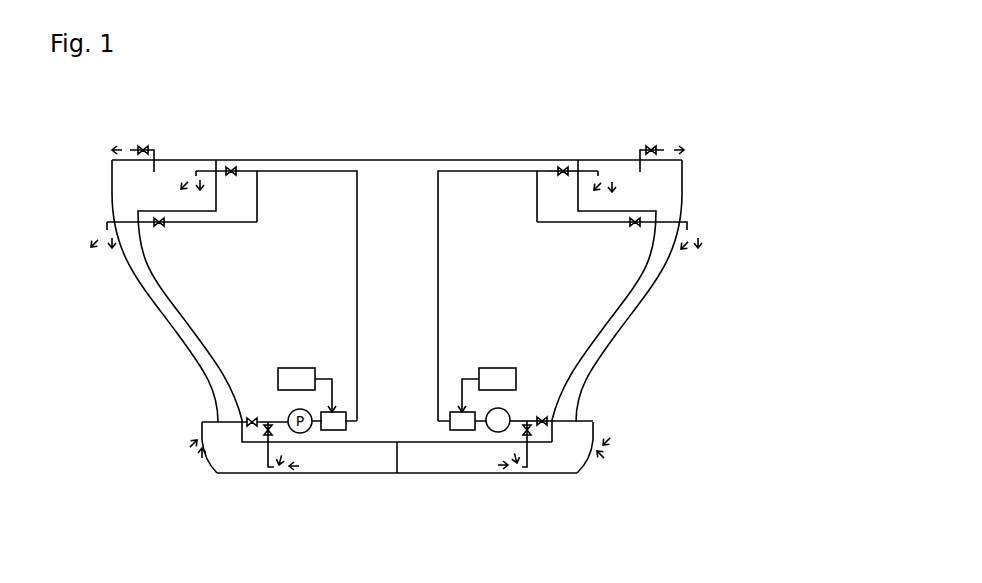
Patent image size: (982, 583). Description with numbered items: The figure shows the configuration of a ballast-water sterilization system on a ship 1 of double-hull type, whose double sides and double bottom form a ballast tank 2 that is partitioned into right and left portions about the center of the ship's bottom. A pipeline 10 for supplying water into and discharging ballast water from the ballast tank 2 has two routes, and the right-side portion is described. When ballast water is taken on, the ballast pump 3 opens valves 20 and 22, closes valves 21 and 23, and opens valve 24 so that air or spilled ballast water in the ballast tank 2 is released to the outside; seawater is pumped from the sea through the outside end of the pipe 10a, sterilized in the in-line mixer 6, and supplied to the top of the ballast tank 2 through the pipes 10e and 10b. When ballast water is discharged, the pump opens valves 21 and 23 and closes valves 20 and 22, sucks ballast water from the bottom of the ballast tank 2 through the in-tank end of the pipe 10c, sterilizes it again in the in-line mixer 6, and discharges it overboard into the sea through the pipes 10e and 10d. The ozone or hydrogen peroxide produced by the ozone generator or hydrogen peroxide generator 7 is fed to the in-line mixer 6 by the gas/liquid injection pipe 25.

The ship 1 is at (173, 332).
The ballast tank 2 is at (600, 358).
The ballast pump 3 is at (492, 430).
The in-line mixer 6 is at (450, 431).
The ozone generator or hydrogen peroxide generator 7 is at (508, 366).
The pipeline 10 is at (423, 202).
The pipe 10a is at (613, 426).
The pipe 10b is at (598, 170).
The pipe 10c is at (523, 466).
The pipe 10d is at (687, 230).
The pipe 10e is at (440, 298).
The valve 20 is at (590, 433).
The valve 21 is at (549, 427).
The valve 22 is at (567, 164).
The valve 23 is at (643, 226).
The valve 24 is at (657, 147).
The gas/liquid injection pipe 25 is at (446, 402).